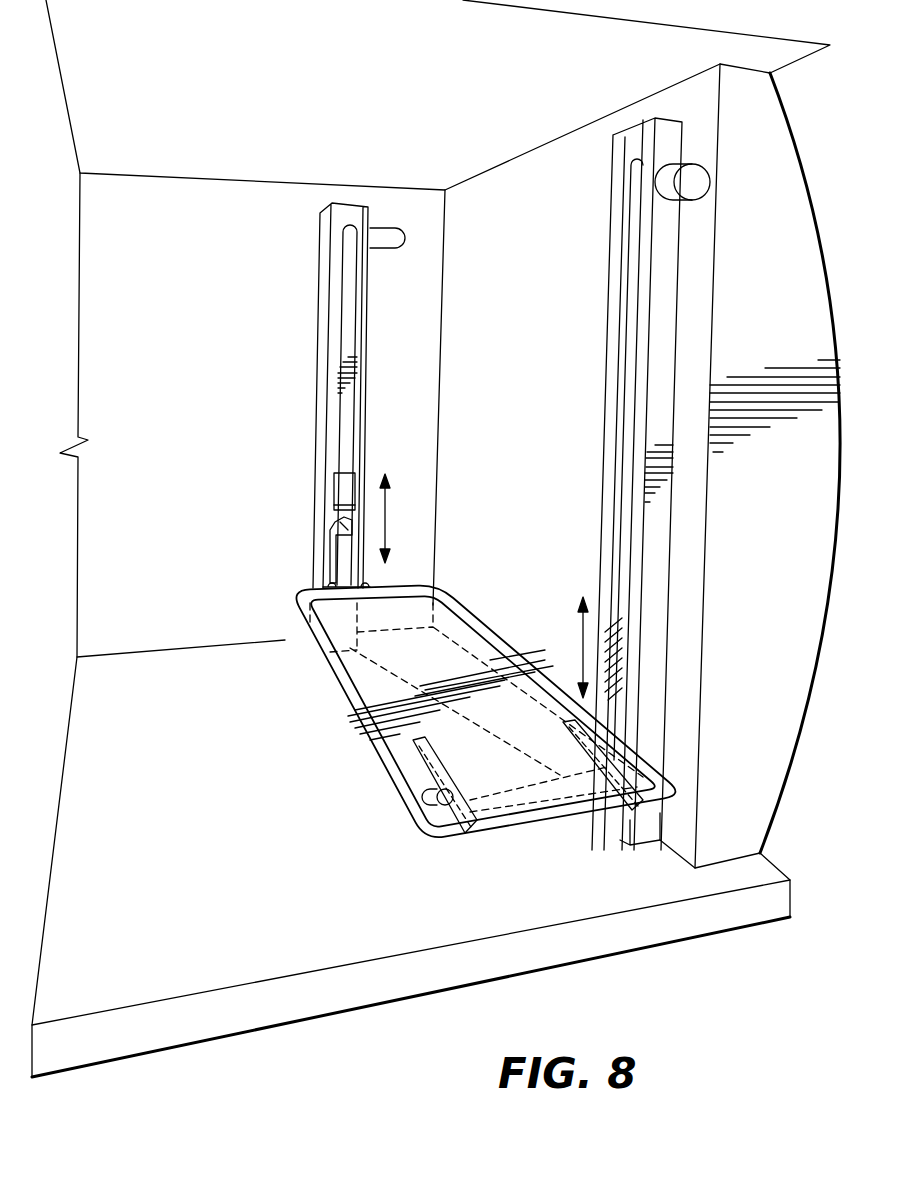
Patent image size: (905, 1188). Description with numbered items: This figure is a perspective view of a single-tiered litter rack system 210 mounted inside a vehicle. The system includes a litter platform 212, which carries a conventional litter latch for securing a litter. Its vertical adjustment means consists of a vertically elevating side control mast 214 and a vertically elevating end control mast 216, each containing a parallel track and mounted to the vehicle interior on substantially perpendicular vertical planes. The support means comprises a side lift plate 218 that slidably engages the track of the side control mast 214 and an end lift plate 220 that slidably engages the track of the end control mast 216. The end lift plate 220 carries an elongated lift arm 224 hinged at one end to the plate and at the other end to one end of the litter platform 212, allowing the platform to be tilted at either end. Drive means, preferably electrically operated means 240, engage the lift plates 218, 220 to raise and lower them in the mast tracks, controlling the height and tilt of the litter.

The single-tiered litter rack system 210 is at (607, 460).
The litter platform 212 is at (360, 743).
The side control mast 214 is at (610, 365).
The end control mast 216 is at (317, 333).
The side lift plate 218 is at (620, 620).
The end lift plate 220 is at (340, 495).
The lift arm 224 is at (345, 563).
The electrically operated means 240 is at (403, 248).